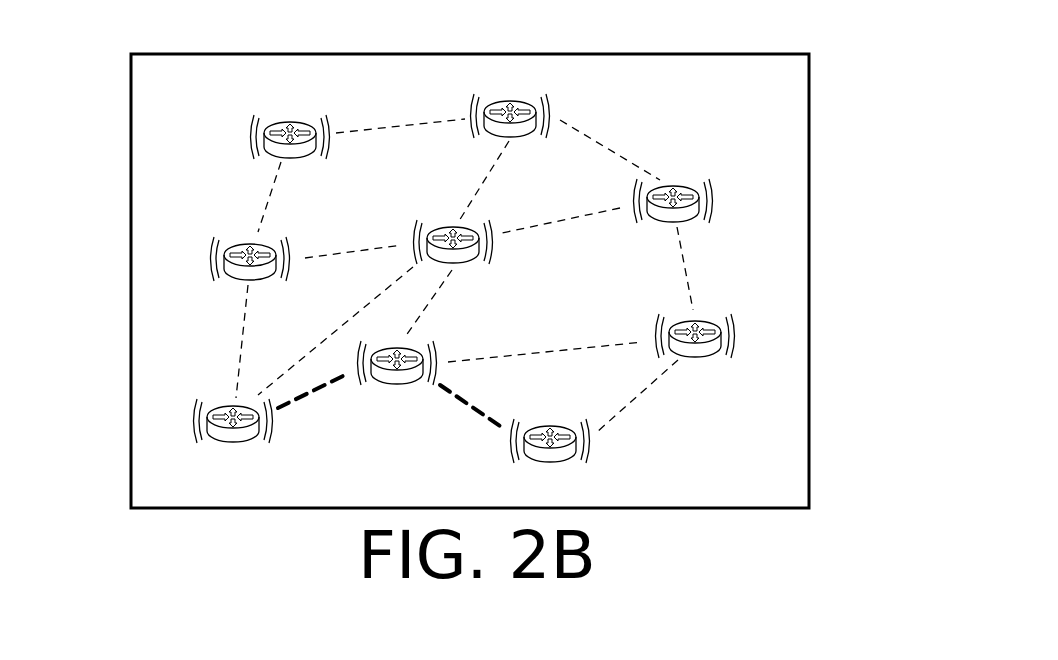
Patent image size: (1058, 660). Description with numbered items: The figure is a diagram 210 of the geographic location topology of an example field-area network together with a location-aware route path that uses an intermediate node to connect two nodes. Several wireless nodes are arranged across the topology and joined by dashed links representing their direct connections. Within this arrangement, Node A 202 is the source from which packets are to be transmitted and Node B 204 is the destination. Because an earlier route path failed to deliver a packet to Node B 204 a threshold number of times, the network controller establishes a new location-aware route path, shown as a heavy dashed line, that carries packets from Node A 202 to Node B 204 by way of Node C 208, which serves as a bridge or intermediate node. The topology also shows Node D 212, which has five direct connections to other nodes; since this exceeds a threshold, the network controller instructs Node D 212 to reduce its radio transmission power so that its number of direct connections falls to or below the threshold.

The diagram 210 is at (106, 50).
The Node A 202 is at (601, 464).
The Node B 204 is at (230, 456).
The Node C 208 is at (436, 328).
The Node D 212 is at (436, 212).